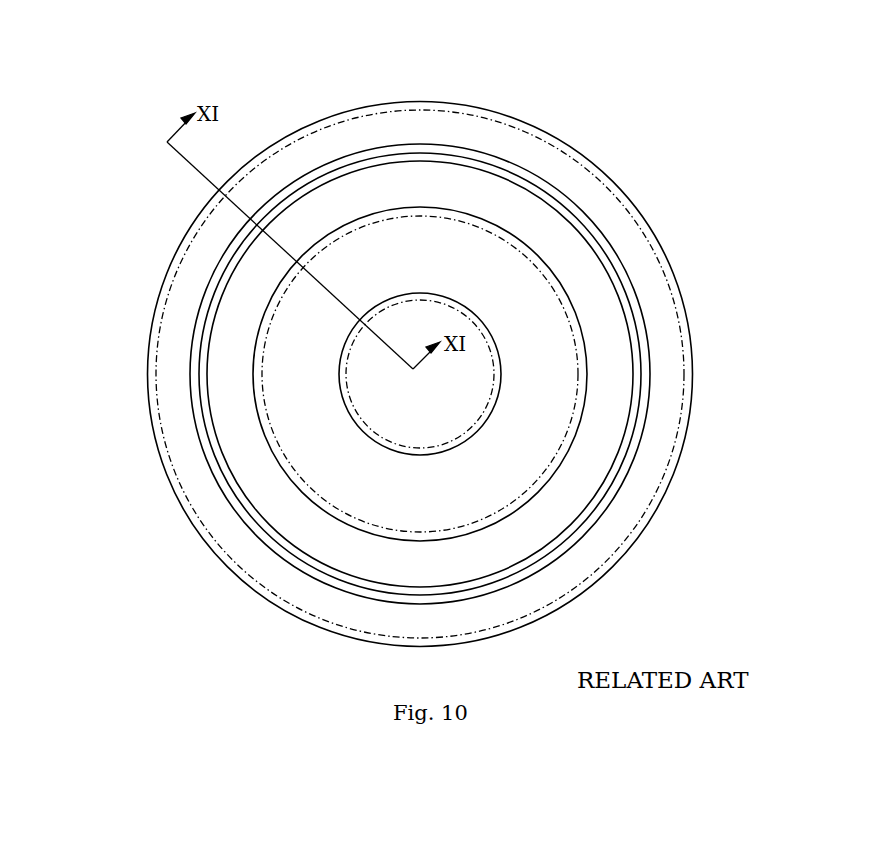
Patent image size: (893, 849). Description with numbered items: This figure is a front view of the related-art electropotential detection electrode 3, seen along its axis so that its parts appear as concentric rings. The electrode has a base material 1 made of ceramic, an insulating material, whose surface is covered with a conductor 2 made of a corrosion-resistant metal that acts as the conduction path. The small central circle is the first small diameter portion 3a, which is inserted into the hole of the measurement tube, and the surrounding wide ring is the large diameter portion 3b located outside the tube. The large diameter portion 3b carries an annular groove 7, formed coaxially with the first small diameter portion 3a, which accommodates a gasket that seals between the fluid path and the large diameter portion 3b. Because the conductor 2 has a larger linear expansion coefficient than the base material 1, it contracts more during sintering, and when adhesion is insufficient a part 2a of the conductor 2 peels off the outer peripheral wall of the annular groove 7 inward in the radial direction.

The base material 1 is at (197, 255).
The conductor 2 is at (172, 317).
The part of the conductor 2a is at (292, 187).
The electropotential detection electrode 3 is at (175, 201).
The first small diameter portion 3a is at (337, 373).
The large diameter portion 3b is at (170, 492).
The annular groove 7 is at (383, 192).